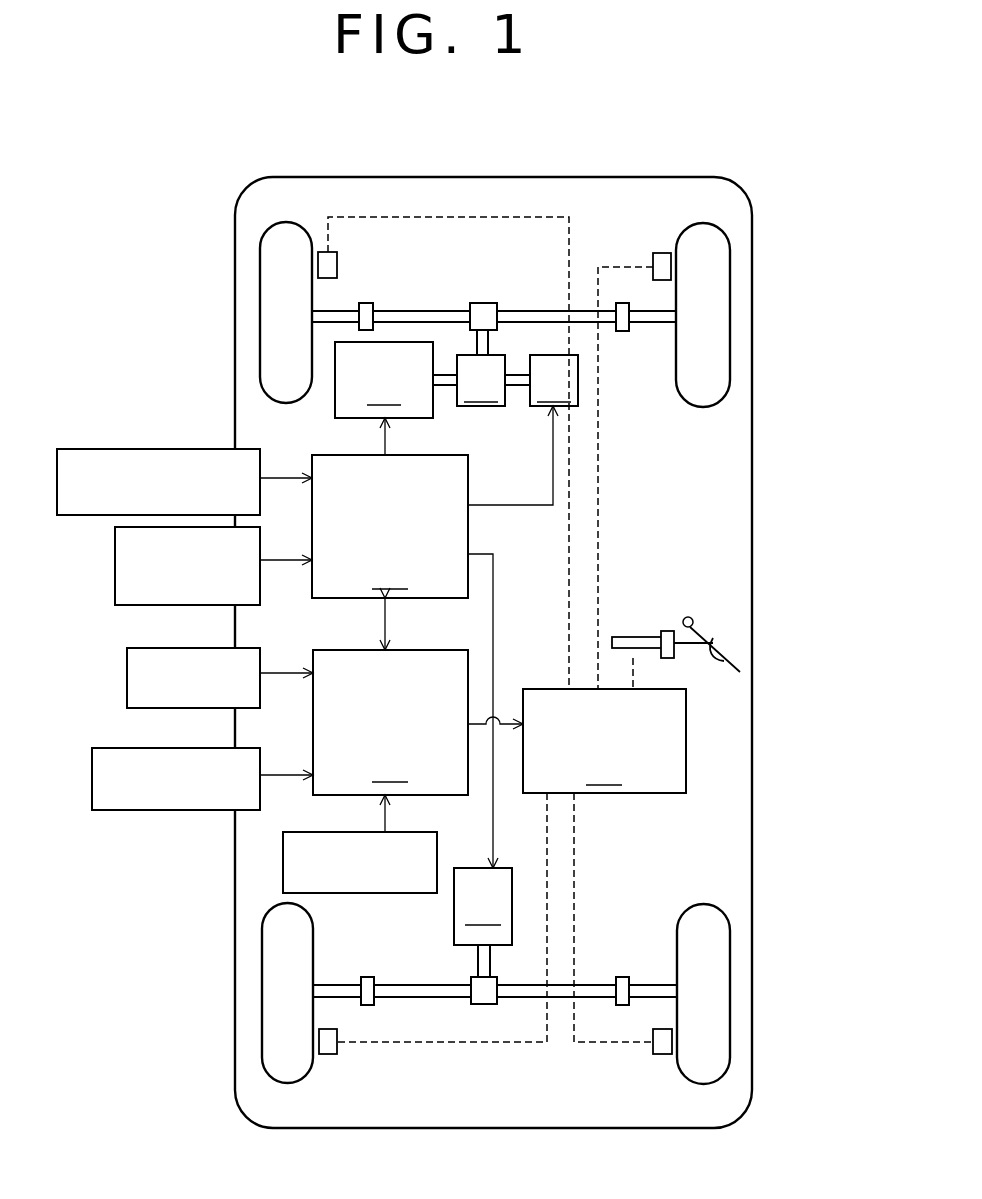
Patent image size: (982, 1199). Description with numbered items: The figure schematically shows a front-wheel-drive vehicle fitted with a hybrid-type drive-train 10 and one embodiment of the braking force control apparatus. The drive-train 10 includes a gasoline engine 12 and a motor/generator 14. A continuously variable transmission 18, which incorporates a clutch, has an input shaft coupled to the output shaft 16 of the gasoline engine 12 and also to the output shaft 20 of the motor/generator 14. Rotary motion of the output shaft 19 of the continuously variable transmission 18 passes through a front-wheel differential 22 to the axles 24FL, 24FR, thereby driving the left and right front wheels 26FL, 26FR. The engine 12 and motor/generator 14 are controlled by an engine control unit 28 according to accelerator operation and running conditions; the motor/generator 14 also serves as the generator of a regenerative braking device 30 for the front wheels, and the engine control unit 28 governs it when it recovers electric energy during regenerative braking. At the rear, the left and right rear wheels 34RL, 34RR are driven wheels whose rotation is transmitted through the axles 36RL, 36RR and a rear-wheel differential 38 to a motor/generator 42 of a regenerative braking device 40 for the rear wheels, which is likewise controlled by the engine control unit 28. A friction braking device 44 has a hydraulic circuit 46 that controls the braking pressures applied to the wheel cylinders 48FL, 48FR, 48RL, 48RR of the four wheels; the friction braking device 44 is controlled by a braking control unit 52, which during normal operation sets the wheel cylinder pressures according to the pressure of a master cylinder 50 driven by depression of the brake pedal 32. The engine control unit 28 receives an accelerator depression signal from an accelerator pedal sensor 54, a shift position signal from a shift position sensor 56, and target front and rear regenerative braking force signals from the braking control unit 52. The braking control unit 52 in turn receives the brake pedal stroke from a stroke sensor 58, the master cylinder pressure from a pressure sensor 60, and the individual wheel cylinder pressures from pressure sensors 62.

The hybrid-type drive-train 10 is at (487, 410).
The gasoline engine 12 is at (384, 380).
The motor/generator 14 is at (554, 380).
The output shaft 16 is at (443, 386).
The continuously variable transmission 18 is at (481, 380).
The output shaft 19 is at (488, 340).
The output shaft 20 is at (518, 386).
The front-wheel differential 22 is at (487, 311).
The axle 24FL is at (398, 318).
The axle 24FR is at (582, 318).
The left front wheel 26FL is at (260, 286).
The right front wheel 26FR is at (730, 328).
The engine control unit 28 is at (390, 526).
The regenerative braking device 30 is at (580, 410).
The brake pedal 32 is at (725, 652).
The left rear wheel 34RL is at (262, 990).
The right rear wheel 34RR is at (730, 993).
The axle 36RL is at (403, 990).
The axle 36RR is at (597, 990).
The rear-wheel differential 38 is at (483, 1005).
The regenerative braking device 40 is at (530, 887).
The motor/generator 42 is at (483, 906).
The friction braking device 44 is at (707, 742).
The hydraulic circuit 46 is at (604, 741).
The wheel cylinder 48FL is at (330, 267).
The wheel cylinder 48FR is at (663, 253).
The wheel cylinder 48RL is at (328, 1055).
The wheel cylinder 48RR is at (663, 1055).
The master cylinder 50 is at (634, 637).
The braking control unit 52 is at (390, 722).
The accelerator pedal sensor 54 is at (180, 449).
The shift position sensor 56 is at (115, 572).
The stroke sensor 58 is at (127, 690).
The pressure sensor 60 is at (178, 810).
The pressure sensors 62 is at (283, 863).